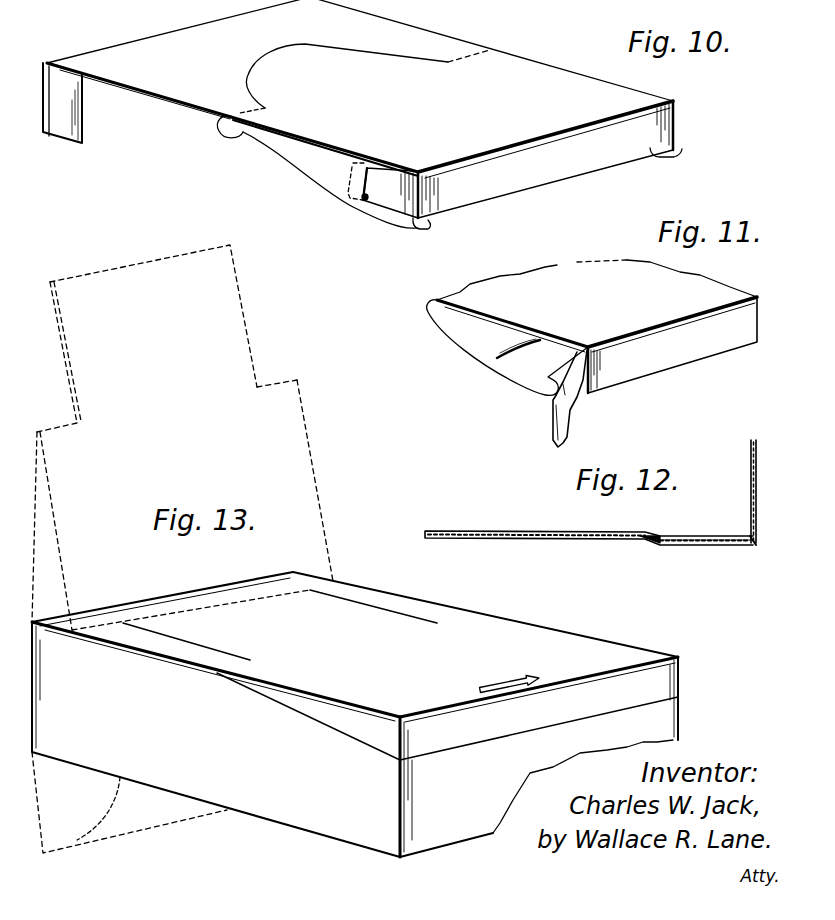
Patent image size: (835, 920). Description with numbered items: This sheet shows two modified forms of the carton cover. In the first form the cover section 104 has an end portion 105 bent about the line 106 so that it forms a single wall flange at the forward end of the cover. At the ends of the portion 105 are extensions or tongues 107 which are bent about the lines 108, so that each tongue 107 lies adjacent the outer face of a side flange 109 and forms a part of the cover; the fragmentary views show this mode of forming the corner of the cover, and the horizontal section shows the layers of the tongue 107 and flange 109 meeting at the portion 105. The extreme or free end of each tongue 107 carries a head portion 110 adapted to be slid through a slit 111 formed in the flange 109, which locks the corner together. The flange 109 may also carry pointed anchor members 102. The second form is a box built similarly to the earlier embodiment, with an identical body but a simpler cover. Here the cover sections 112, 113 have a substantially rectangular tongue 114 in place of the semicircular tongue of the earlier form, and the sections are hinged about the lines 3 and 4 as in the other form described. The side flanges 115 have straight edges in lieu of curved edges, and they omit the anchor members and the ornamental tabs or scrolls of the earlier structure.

In FIG. 10, the pointed anchor member 102 is at (677, 157).
In FIG. 10, the cover section 104 is at (360, 59).
In FIG. 11, the cover section 104 is at (597, 306).
In FIG. 10, the end portion 105 is at (545, 159).
In FIG. 11, the end portion 105 is at (672, 345).
In FIG. 12, the end portion 105 is at (758, 478).
In FIG. 10, the bend line 106 is at (530, 140).
In FIG. 11, the bend line 106 is at (660, 322).
In FIG. 10, the extension or tongue 107 is at (394, 205).
In FIG. 11, the extension or tongue 107 is at (577, 400).
In FIG. 12, the extension or tongue 107 is at (720, 548).
In FIG. 10, the bend line 108 is at (677, 121).
In FIG. 11, the bend line 108 is at (592, 375).
In FIG. 12, the bend line 108 is at (757, 545).
In FIG. 10, the side flange 109 is at (330, 170).
In FIG. 11, the side flange 109 is at (472, 335).
In FIG. 12, the side flange 109 is at (720, 531).
In FIG. 10, the head portion 110 is at (350, 196).
In FIG. 11, the head portion 110 is at (562, 428).
In FIG. 12, the head portion 110 is at (668, 532).
In FIG. 10, the slit 111 is at (362, 201).
In FIG. 13, the cover section 112 is at (357, 588).
In FIG. 13, the cover section 113 is at (234, 527).
In FIG. 13, the rectangular tongue 114 is at (153, 334).
In FIG. 13, the side flange 115 is at (343, 723).
In FIG. 13, the hinge line 3 is at (277, 378).
In FIG. 13, the hinge line 4 is at (55, 425).